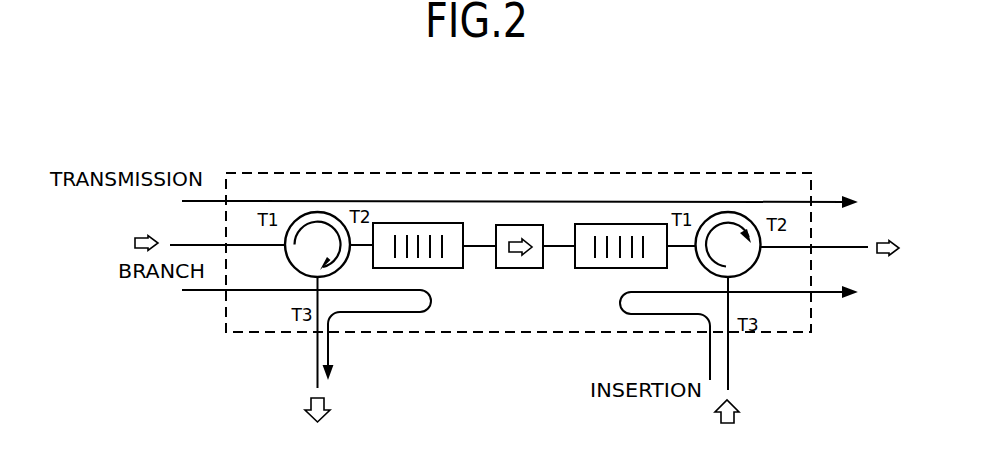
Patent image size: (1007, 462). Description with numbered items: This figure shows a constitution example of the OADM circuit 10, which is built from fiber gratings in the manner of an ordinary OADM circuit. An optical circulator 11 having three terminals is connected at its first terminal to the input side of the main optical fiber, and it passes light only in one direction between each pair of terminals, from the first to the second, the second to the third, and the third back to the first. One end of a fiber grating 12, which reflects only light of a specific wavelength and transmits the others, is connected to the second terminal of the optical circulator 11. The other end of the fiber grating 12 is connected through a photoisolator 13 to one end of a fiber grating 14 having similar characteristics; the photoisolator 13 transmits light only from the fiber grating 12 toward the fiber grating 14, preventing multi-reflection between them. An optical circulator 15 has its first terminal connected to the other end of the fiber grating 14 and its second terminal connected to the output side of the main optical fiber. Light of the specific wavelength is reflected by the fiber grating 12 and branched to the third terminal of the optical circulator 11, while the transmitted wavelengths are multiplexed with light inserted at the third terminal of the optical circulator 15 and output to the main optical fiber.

The OADM circuit 10 is at (518, 239).
The optical circulator 11 is at (312, 212).
The fiber grating 12 is at (442, 268).
The photoisolator 13 is at (518, 268).
The fiber grating 14 is at (603, 268).
The optical circulator 15 is at (727, 213).